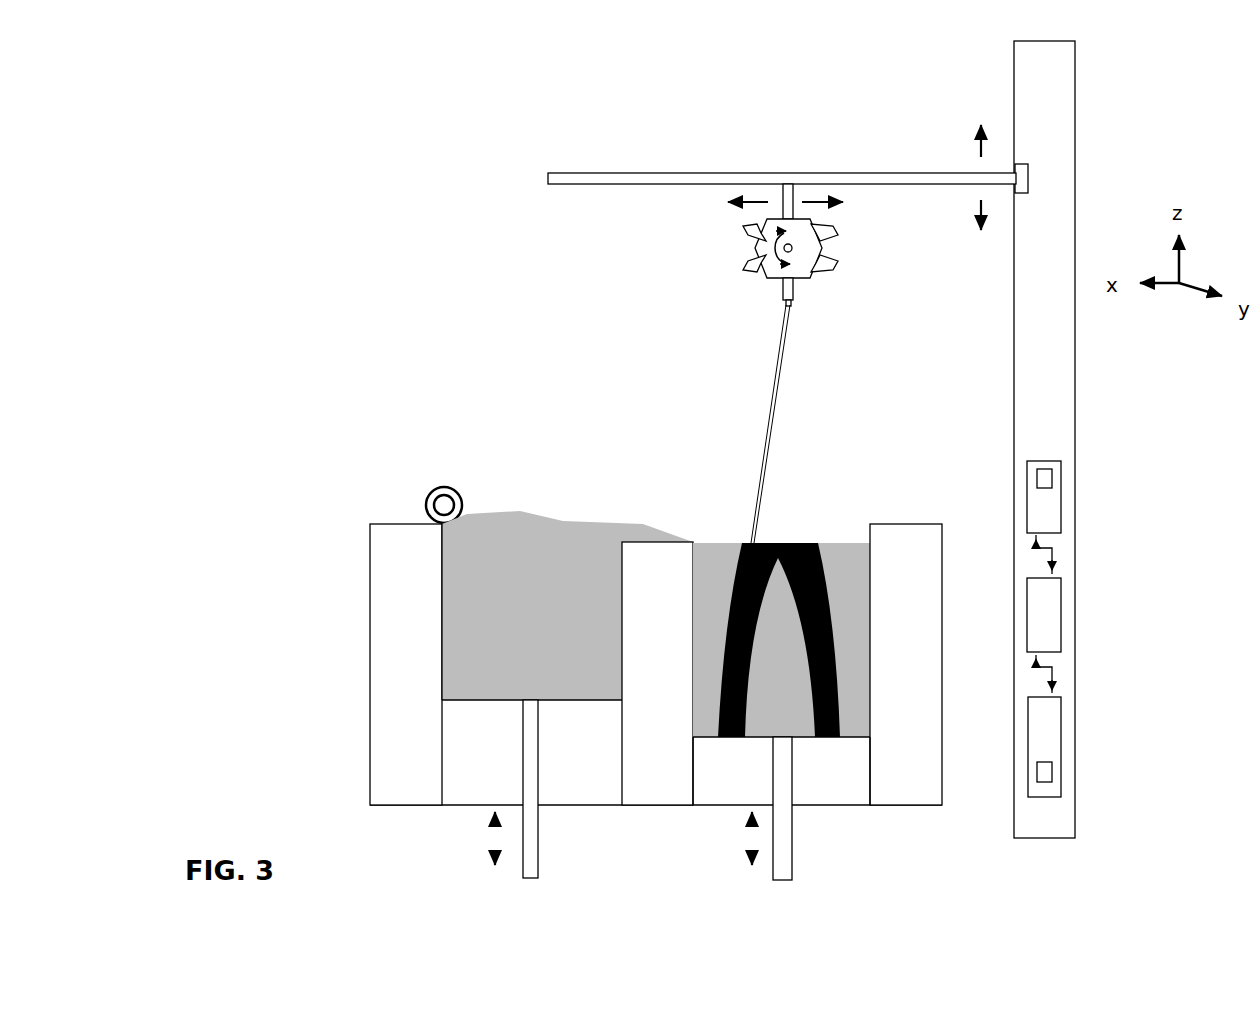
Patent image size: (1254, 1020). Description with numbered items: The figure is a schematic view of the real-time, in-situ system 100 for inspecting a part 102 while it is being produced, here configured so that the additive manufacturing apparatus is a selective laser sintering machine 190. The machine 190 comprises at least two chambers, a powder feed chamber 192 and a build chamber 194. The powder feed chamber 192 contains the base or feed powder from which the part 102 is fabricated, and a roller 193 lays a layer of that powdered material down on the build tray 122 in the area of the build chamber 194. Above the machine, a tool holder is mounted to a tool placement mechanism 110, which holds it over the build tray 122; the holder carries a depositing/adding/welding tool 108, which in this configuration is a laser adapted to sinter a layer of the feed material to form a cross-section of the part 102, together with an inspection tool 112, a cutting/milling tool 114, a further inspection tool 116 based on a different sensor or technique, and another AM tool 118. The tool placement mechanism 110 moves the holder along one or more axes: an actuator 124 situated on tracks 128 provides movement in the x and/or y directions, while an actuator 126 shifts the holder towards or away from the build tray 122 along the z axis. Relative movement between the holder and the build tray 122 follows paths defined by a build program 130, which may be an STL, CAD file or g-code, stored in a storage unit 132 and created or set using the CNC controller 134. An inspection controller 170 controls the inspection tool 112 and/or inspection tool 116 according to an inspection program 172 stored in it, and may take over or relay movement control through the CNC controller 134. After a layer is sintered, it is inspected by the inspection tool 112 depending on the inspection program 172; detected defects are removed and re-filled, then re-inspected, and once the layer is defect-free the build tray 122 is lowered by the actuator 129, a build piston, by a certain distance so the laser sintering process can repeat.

The real-time, in-situ system 100 is at (222, 155).
The part 102 is at (793, 543).
The depositing/adding/welding tool 108 is at (784, 295).
The tool placement mechanism 110 is at (568, 172).
The inspection tool 112 is at (745, 268).
The cutting/milling tool 114 is at (832, 268).
The inspection tool 116 is at (752, 250).
The AM tool 118 is at (745, 230).
The build tray 122 is at (762, 742).
The actuator 124 is at (795, 196).
The actuator 126 is at (1030, 178).
The tracks 128 is at (930, 185).
The actuator 129 is at (793, 848).
The build program 130 is at (1052, 772).
The storage unit 132 is at (1061, 718).
The CNC controller 134 is at (1061, 620).
The inspection controller 170 is at (1061, 500).
The inspection program 172 is at (1052, 478).
The selective laser sintering machine 190 is at (178, 685).
The powder feed chamber 192 is at (442, 599).
The roller 193 is at (425, 504).
The build chamber 194 is at (874, 633).